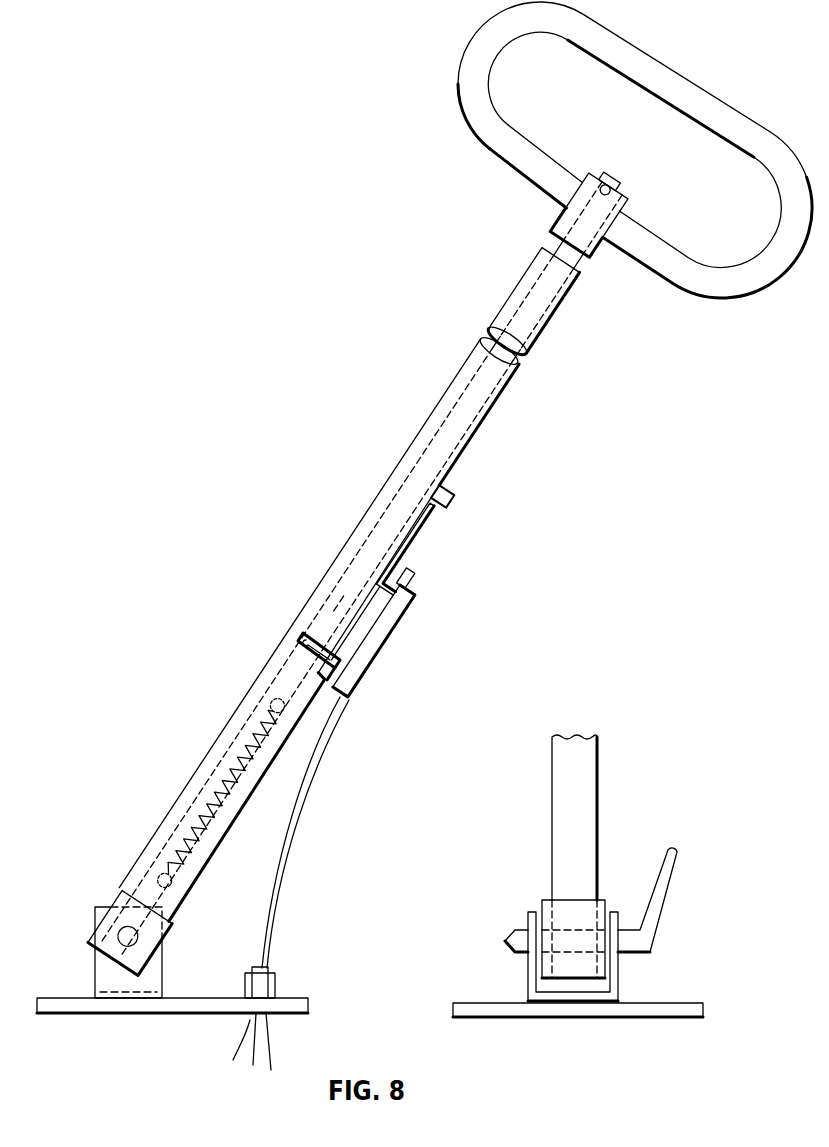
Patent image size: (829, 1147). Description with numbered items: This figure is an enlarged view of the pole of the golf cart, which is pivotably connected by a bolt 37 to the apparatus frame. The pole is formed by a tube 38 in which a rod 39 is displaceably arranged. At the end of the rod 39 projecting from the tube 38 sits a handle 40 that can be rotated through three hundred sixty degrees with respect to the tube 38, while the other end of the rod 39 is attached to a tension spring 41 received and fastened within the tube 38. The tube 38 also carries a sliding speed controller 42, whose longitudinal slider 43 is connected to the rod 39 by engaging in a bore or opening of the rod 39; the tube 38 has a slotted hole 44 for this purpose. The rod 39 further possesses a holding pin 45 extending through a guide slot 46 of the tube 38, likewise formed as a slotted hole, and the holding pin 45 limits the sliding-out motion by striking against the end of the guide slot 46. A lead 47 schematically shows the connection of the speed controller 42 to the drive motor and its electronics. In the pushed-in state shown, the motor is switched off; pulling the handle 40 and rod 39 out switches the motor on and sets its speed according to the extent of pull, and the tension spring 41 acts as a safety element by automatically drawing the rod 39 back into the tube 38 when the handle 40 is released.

The bolt 37 is at (120, 940).
The tube 38 is at (383, 494).
The rod 39 is at (557, 247).
The handle 40 is at (505, 161).
The tension spring 41 is at (228, 770).
The sliding speed controller 42 is at (380, 650).
The longitudinal slider 43 is at (305, 636).
The slotted hole 44 is at (357, 617).
The holding pin 45 is at (452, 492).
The guide slot 46 is at (455, 463).
The lead 47 is at (278, 858).